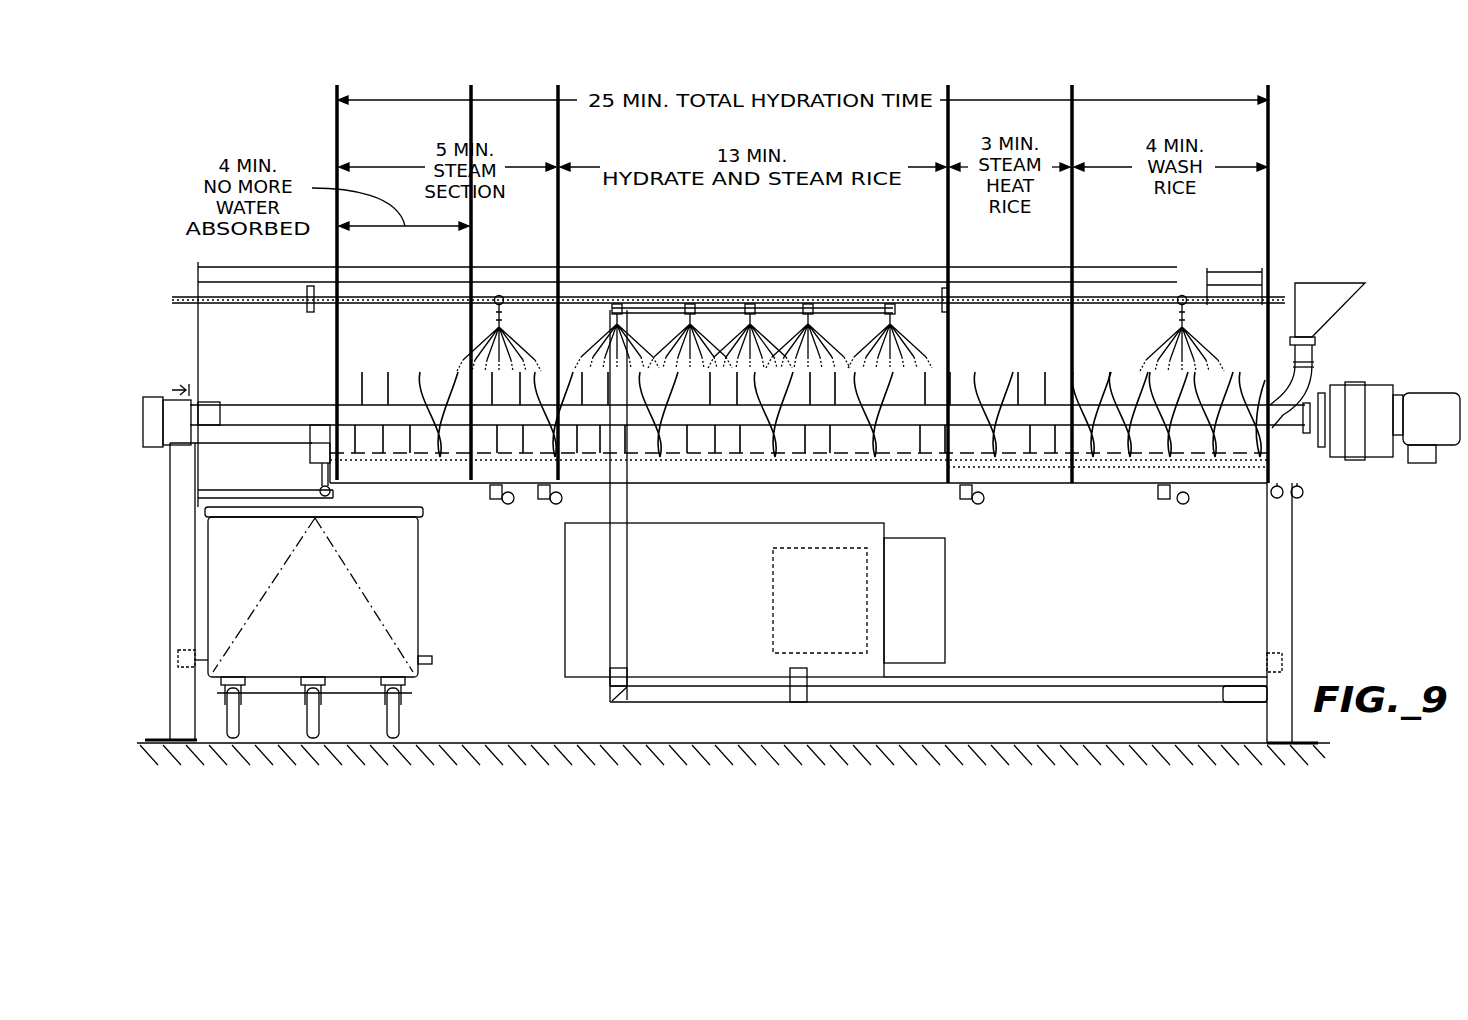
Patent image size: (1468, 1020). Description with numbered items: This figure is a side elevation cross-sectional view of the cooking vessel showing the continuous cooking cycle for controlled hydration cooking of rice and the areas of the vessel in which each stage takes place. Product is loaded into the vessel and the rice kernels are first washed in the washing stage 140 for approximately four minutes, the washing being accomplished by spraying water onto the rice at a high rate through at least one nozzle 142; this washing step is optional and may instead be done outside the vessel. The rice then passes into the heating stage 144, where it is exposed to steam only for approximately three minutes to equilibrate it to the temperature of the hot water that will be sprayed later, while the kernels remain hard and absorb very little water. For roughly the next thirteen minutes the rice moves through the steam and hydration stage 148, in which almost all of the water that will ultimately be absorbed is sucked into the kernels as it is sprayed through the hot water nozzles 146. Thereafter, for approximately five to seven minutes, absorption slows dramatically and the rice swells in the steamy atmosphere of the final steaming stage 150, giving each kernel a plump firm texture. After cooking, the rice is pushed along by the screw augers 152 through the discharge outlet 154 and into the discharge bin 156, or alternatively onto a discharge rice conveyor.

The washing stage 140 is at (1156, 112).
The nozzle 142 is at (1180, 279).
The heating stage 144 is at (992, 112).
The hot water nozzles 146 is at (890, 304).
The steam and hydration stage 148 is at (580, 104).
The final steaming stage 150 is at (507, 88).
The screw augers 152 is at (1100, 413).
The discharge outlet 154 is at (197, 520).
The discharge bin 156 is at (220, 617).